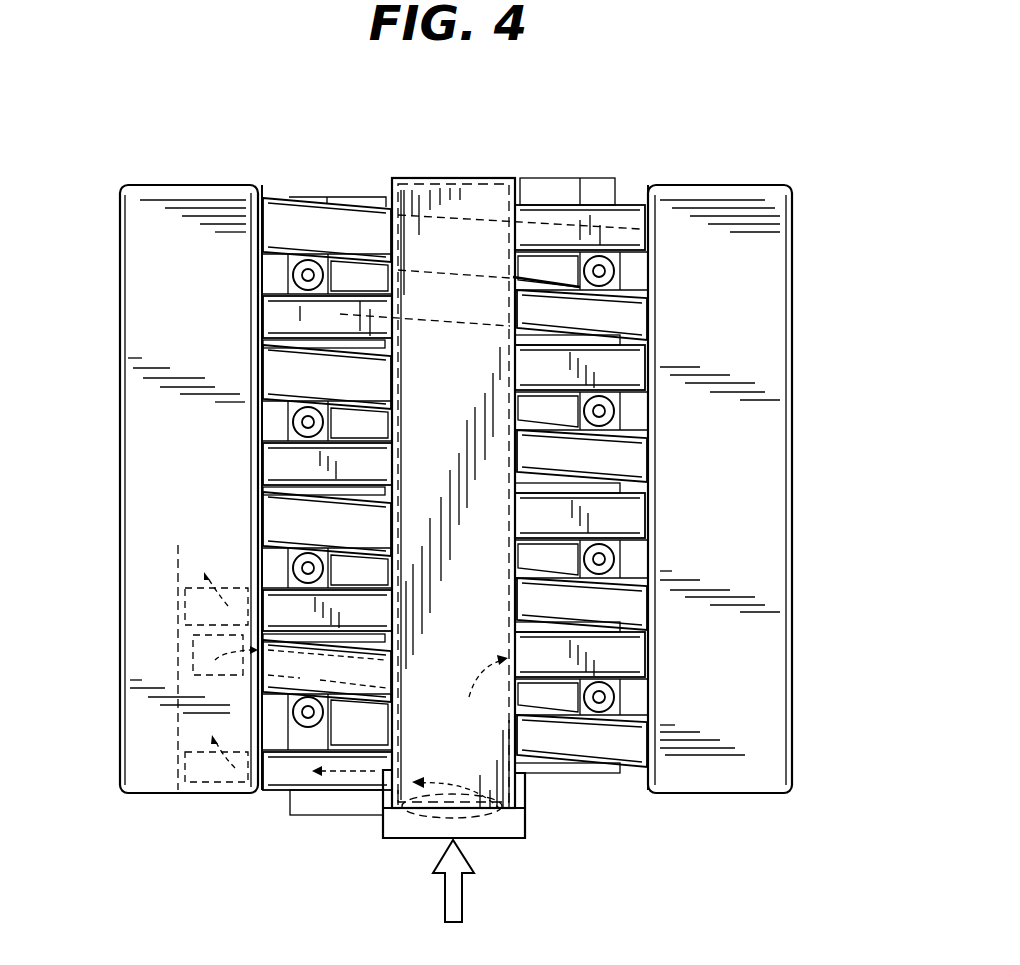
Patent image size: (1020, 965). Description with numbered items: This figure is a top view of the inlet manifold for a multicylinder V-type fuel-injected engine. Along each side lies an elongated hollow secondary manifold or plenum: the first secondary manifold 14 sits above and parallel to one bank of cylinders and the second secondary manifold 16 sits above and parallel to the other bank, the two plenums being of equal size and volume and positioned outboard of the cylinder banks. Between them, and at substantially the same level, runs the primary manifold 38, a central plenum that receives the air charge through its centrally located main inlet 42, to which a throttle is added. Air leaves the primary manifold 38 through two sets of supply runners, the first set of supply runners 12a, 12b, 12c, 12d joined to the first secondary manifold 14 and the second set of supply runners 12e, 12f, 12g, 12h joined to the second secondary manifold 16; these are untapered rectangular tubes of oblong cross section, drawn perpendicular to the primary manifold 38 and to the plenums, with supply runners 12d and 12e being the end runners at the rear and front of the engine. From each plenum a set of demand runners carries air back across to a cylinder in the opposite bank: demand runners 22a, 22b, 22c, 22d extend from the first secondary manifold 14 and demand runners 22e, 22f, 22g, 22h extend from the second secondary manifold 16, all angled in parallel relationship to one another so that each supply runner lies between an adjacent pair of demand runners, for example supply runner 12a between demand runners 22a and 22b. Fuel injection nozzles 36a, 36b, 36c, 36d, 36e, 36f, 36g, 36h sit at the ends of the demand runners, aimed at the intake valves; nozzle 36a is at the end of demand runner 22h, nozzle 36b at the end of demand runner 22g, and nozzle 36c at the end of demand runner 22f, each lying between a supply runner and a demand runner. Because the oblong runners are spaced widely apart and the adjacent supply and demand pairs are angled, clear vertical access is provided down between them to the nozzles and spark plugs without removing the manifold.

The first secondary manifold 14 is at (204, 190).
The second secondary manifold 16 is at (711, 190).
The primary manifold 38 is at (462, 195).
The main inlet 42 is at (440, 838).
The supply runner 12a is at (282, 775).
The supply runner 12b is at (272, 613).
The supply runner 12c is at (270, 468).
The supply runner 12d is at (278, 326).
The supply runner 12e is at (625, 232).
The supply runner 12f is at (632, 365).
The supply runner 12g is at (632, 515).
The supply runner 12h is at (628, 652).
The demand runner 22a is at (272, 662).
The demand runner 22b is at (272, 527).
The demand runner 22c is at (275, 385).
The demand runner 22d is at (285, 233).
The demand runner 22e is at (630, 320).
The demand runner 22f is at (628, 470).
The demand runner 22g is at (630, 602).
The demand runner 22h is at (630, 745).
The fuel injection nozzle 36a is at (296, 712).
The fuel injection nozzle 36b is at (295, 568).
The fuel injection nozzle 36c is at (296, 422).
The fuel injection nozzle 36d is at (296, 278).
The fuel injection nozzle 36e is at (612, 692).
The fuel injection nozzle 36f is at (612, 557).
The fuel injection nozzle 36g is at (612, 415).
The fuel injection nozzle 36h is at (612, 268).